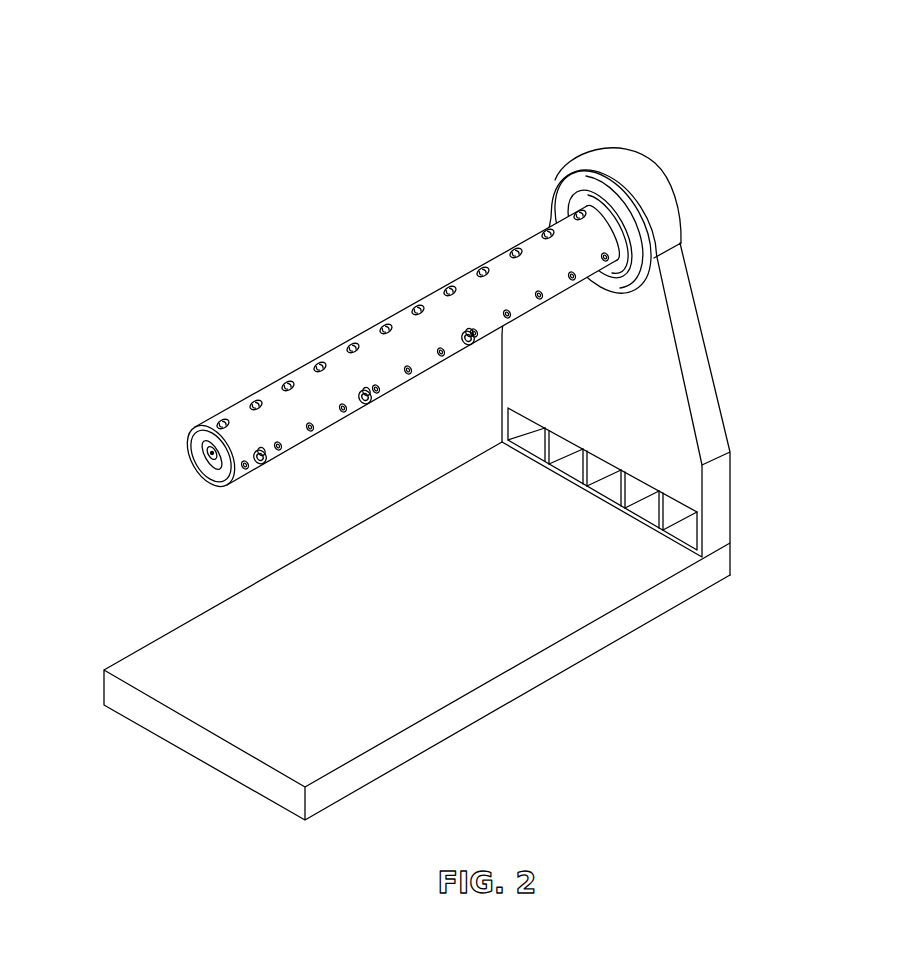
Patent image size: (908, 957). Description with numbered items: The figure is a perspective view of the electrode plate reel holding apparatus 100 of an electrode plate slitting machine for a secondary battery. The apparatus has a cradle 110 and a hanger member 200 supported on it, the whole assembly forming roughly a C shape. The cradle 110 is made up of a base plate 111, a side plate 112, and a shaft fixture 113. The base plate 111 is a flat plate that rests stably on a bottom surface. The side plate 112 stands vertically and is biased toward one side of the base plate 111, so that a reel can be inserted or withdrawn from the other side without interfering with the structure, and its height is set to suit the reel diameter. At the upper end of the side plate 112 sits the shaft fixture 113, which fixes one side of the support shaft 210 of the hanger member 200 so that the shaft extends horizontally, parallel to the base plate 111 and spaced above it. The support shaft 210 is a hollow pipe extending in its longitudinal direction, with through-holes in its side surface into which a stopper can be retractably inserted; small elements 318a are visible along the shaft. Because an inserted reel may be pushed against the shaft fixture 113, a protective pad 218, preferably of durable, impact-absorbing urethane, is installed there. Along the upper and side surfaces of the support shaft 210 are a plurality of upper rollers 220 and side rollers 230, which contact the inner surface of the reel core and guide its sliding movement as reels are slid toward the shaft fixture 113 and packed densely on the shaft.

The electrode plate reel holding apparatus 100 is at (298, 48).
The cradle 110 is at (488, 484).
The base plate 111 is at (717, 567).
The side plate 112 is at (697, 358).
The shaft fixture 113 is at (681, 200).
The hanger member 200 is at (402, 363).
The support shaft 210 is at (403, 323).
The protective pad 218 is at (567, 198).
The upper roller 220 is at (450, 285).
The side roller 230 is at (313, 431).
The fastening bolts 318a is at (263, 461).